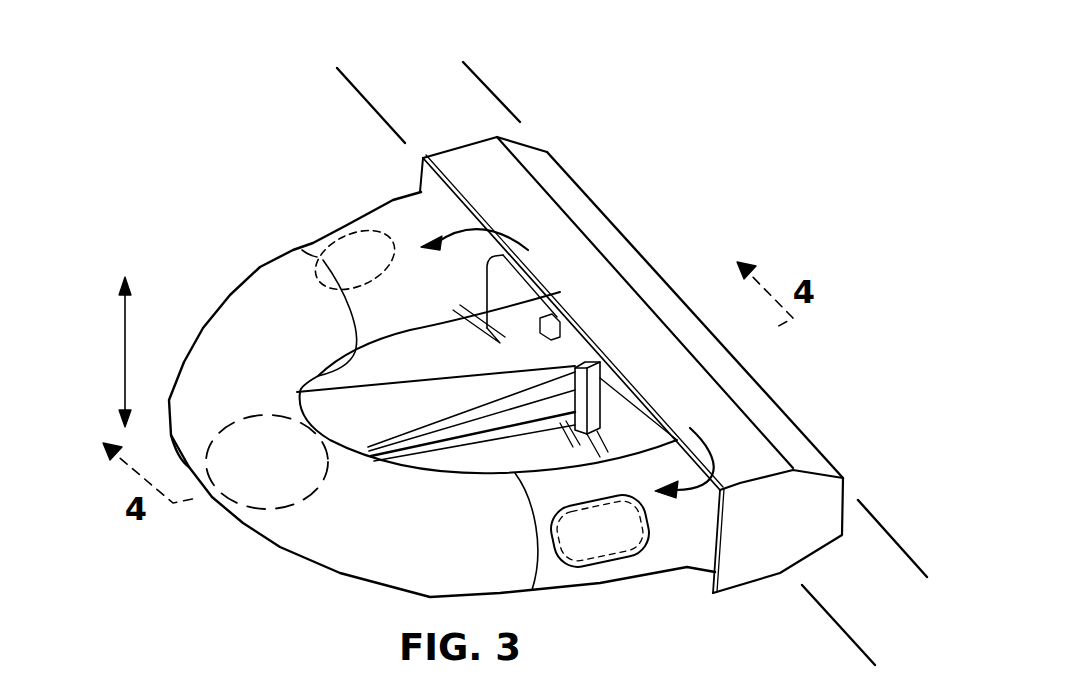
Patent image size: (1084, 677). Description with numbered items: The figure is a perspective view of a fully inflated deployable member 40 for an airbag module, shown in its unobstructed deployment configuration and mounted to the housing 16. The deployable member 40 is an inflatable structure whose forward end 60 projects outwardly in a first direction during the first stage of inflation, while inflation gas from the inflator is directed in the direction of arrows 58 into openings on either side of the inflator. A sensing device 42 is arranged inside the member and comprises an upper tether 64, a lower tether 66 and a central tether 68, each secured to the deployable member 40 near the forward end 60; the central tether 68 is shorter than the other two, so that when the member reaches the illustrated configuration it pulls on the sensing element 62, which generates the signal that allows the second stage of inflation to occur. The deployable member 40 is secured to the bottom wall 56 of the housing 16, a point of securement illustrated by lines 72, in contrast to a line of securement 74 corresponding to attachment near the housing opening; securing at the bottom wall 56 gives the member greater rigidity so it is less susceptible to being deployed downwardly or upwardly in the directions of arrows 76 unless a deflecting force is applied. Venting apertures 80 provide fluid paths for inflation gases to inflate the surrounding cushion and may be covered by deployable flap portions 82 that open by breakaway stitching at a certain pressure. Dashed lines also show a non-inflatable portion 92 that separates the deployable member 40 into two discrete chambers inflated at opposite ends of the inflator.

The housing 16 is at (765, 410).
The deployable member 40 is at (268, 260).
The sensing device 42 is at (456, 345).
The bottom wall 56 is at (823, 462).
The arrows 58 is at (461, 370).
The forward end 60 is at (238, 415).
The sensing element 62 is at (600, 385).
The upper tether 64 is at (505, 370).
The lower tether 66 is at (556, 345).
The central tether 68 is at (580, 365).
The lines 72 is at (505, 102).
The line of securement 74 is at (380, 115).
The arrows 76 is at (128, 340).
The venting apertures 80 is at (347, 232).
The deployable flap portions 82 is at (358, 226).
The non-inflatable portion 92 is at (268, 493).